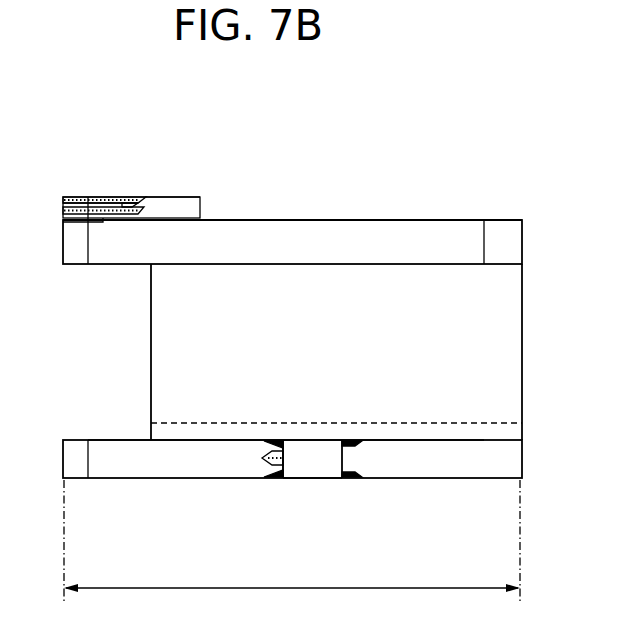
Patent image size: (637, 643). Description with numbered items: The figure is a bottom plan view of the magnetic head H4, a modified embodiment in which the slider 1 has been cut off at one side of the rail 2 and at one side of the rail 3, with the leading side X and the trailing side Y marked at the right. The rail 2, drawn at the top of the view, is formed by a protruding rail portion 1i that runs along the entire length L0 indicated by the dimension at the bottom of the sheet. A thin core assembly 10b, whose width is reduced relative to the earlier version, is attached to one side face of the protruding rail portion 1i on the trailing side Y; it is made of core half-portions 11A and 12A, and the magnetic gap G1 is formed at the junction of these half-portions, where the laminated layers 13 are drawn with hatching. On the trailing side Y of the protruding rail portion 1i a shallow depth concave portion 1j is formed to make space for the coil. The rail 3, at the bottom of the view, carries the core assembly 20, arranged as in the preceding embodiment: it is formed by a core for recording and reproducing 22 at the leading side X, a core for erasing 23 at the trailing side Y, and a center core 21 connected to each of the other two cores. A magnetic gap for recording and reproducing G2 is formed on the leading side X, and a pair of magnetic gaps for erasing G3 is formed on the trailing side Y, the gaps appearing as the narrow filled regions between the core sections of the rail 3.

The slider 1 is at (524, 298).
The rail 2 is at (422, 216).
The rail 3 is at (440, 492).
The protruding rail portion 1i is at (362, 235).
The shallow depth concave portion 1j is at (63, 221).
The thin core assembly 10b is at (166, 193).
The core 11A is at (186, 207).
The core 12A is at (82, 197).
The laminated piezoelectric layers 13 is at (65, 210).
The magnetic gap G1 is at (122, 196).
The magnetic gap for recording and reproducing G2 is at (343, 452).
The magnetic gaps for erasing G3 is at (284, 462).
The magnetic head H4 is at (276, 178).
The core assembly 20 is at (247, 497).
The center core 21 is at (308, 466).
The core for recording and reproducing 22 is at (398, 450).
The core for erasing 23 is at (185, 480).
The entire length L0 is at (292, 546).
The leading side X is at (532, 375).
The trailing side Y is at (126, 355).